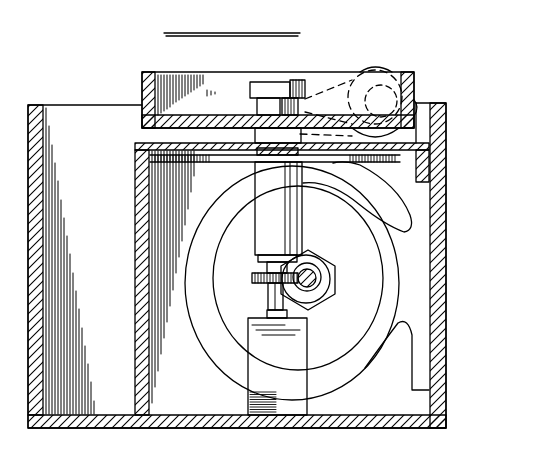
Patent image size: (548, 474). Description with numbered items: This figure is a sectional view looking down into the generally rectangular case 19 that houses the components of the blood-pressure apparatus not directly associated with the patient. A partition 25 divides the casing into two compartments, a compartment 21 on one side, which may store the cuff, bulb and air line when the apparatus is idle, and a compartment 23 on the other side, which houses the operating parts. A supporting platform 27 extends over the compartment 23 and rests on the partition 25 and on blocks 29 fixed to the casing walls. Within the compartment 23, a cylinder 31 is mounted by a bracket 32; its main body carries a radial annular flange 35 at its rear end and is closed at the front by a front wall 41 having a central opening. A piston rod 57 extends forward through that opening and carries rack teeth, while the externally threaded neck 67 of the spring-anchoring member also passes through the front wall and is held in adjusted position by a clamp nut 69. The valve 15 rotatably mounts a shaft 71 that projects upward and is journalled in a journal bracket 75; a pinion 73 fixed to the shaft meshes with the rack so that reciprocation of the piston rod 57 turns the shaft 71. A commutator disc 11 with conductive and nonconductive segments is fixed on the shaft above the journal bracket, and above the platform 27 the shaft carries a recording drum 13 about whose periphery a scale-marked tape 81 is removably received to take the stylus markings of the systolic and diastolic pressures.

The commutator disc 11 is at (379, 161).
The recording drum 13 is at (200, 80).
The valve 15 is at (272, 400).
The case 19 is at (447, 355).
The compartment 21 is at (65, 399).
The compartment 23 is at (195, 400).
The partition 25 is at (140, 397).
The supporting platform 27 is at (156, 143).
The blocks 29 is at (447, 149).
The cylinder 31 is at (190, 364).
The bracket 32 is at (422, 270).
The radial annular flange 35 is at (375, 368).
The front wall 41 is at (383, 298).
The piston rod 57 is at (314, 277).
The externally threaded neck 67 is at (313, 258).
The clamp nut 69 is at (303, 250).
The shaft 71 is at (270, 296).
The pinion 73 is at (253, 278).
The journal bracket 75 is at (262, 221).
The tape 81 is at (142, 83).